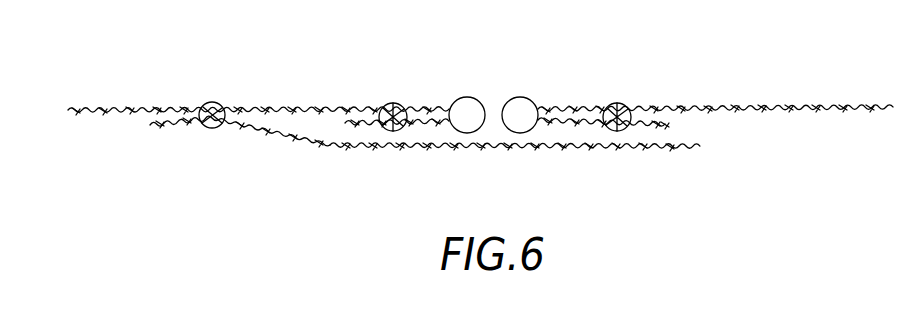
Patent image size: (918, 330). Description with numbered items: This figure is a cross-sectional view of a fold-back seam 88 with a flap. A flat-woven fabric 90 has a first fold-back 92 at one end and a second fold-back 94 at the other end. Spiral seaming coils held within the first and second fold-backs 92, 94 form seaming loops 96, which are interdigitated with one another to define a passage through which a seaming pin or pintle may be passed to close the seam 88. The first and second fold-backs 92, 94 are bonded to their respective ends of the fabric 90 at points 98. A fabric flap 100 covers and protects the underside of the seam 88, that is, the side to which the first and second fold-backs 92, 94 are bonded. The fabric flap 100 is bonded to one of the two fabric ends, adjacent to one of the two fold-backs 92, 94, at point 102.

The seam 88 is at (502, 65).
The flat-woven fabric 90 is at (120, 108).
The first fold-back 92 is at (348, 128).
The second fold-back 94 is at (659, 125).
The seaming loops 96 is at (479, 97).
The points 98 is at (400, 72).
The fabric flap 100 is at (500, 148).
The point 102 is at (213, 103).